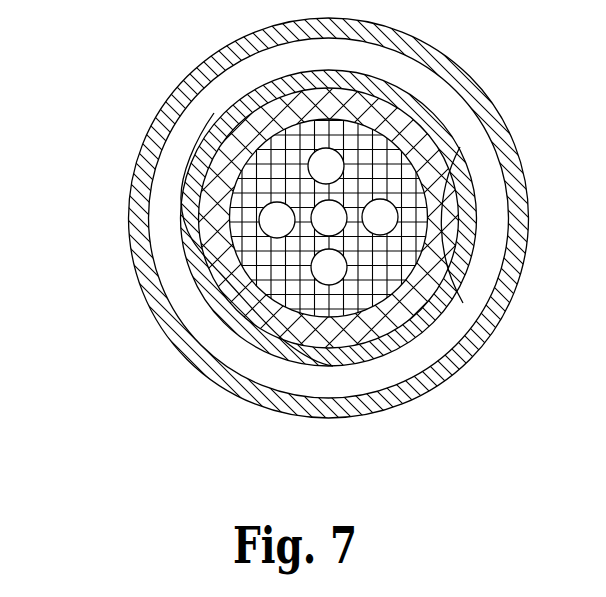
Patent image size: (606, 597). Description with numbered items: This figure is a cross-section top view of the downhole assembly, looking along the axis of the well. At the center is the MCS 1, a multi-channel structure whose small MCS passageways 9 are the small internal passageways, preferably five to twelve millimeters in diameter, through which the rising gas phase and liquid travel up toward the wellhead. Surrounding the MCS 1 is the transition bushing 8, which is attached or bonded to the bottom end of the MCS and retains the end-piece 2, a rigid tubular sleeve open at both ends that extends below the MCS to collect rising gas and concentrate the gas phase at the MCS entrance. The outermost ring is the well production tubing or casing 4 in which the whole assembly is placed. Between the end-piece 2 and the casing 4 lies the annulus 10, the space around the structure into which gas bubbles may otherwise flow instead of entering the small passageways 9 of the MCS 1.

The MCS 1 is at (240, 222).
The end-piece 2 is at (205, 157).
The well production tubing or casing 4 is at (187, 95).
The transition bushing 8 is at (223, 259).
The small MCS passageways 9 is at (328, 267).
The annulus 10 is at (210, 333).